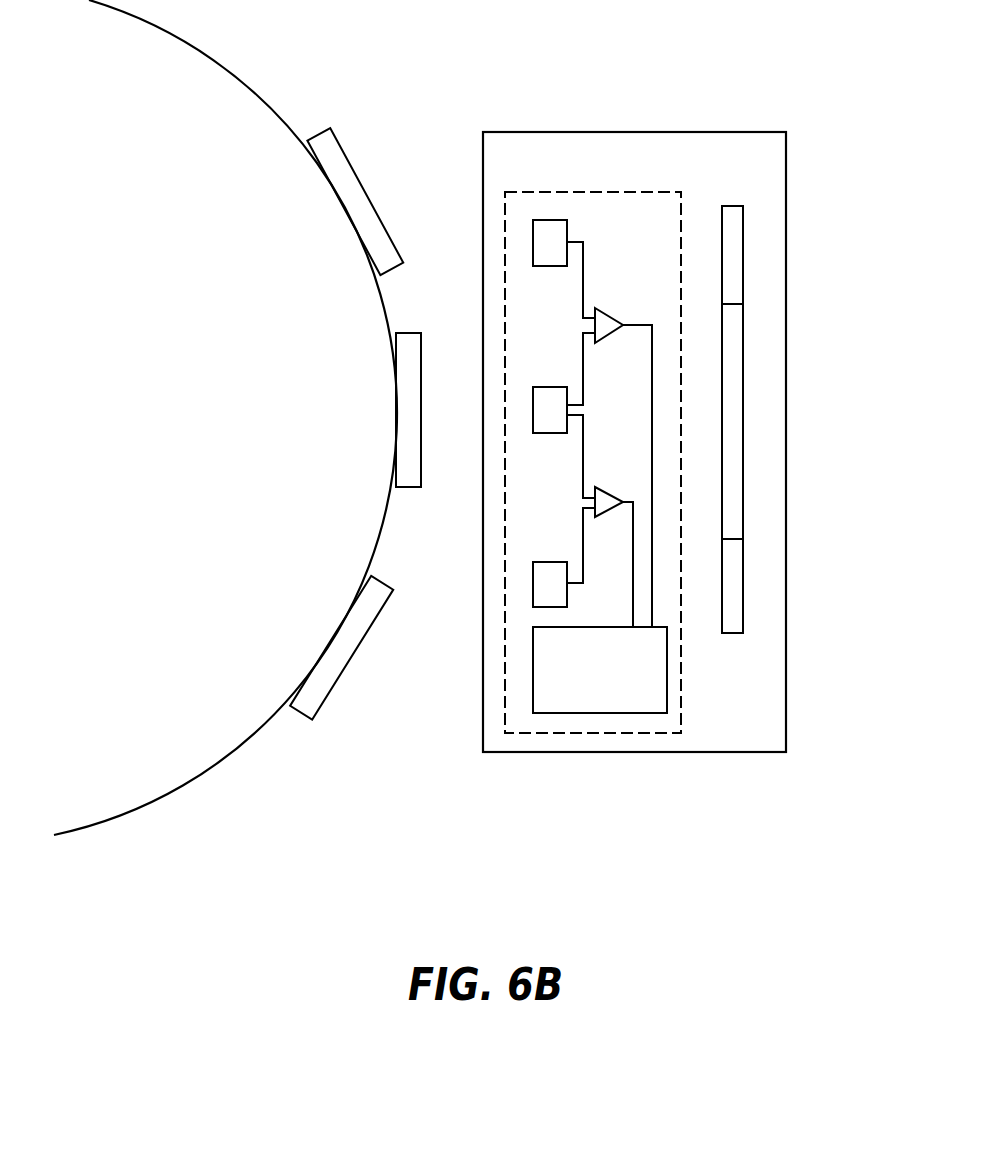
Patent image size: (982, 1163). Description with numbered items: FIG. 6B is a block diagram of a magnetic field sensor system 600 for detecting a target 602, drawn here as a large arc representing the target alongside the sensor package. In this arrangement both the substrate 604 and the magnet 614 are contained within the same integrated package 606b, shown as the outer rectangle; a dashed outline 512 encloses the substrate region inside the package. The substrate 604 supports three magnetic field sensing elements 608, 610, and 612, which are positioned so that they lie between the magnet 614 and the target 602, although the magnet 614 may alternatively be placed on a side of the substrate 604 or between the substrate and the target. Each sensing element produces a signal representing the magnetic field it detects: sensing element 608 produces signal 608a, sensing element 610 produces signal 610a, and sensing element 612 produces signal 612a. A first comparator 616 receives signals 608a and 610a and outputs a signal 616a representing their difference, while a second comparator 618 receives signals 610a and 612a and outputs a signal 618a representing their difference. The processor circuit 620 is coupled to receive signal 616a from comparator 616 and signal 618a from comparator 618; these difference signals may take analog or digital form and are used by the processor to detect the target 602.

The system 600 is at (766, 90).
The target 602 is at (213, 768).
The substrate 604 is at (593, 192).
The package 606b is at (633, 131).
The magnetic field sensing element 608 is at (535, 246).
The signal 608a is at (585, 253).
The magnetic field sensing element 610 is at (535, 408).
The signal 610a is at (583, 474).
The magnetic field sensing element 612 is at (535, 585).
The signal 612a is at (580, 528).
The magnet 614 is at (732, 206).
The comparator 616 is at (617, 311).
The signal 616a is at (652, 350).
The comparator 618 is at (612, 517).
The signal 618a is at (633, 578).
The processor circuit 620 is at (622, 700).
The circuit board 512 is at (682, 665).